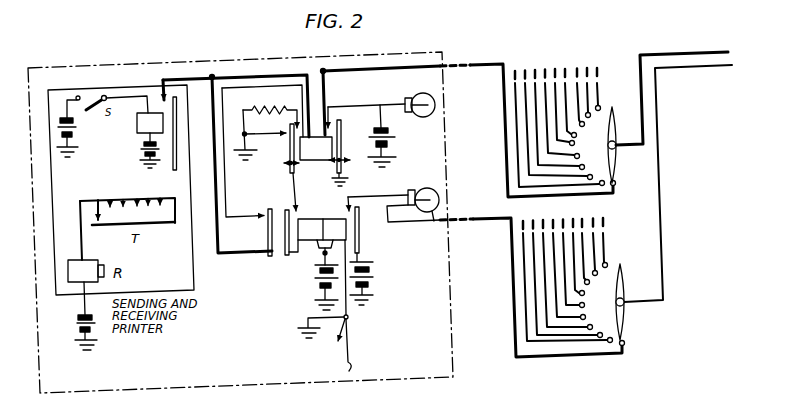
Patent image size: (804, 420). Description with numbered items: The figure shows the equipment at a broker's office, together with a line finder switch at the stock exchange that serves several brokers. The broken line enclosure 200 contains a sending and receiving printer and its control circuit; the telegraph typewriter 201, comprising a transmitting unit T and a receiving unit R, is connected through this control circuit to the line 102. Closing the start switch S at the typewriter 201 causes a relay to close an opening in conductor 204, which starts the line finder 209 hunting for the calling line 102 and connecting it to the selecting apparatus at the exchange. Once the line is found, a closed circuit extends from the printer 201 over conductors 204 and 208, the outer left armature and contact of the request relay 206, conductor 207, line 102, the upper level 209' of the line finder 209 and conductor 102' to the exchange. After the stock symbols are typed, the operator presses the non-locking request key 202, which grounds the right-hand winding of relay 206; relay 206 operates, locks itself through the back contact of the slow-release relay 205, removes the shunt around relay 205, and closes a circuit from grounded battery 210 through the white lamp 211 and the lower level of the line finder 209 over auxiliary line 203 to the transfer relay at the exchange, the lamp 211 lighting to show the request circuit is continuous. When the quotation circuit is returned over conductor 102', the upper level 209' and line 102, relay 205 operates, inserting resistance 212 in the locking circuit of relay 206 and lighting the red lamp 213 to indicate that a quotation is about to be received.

The broken line enclosure 200 is at (105, 63).
The telegraph typewriter 201 is at (78, 295).
The request key 202 is at (349, 340).
The auxiliary line 203 is at (717, 70).
The conductor 204 is at (164, 81).
The slow-release relay 205 is at (299, 148).
The request relay 206 is at (336, 228).
The conductor 207 is at (247, 88).
The conductor 208 is at (218, 255).
The line finder 209 is at (532, 278).
The upper level of line finder 209' is at (565, 111).
The grounded battery 210 is at (370, 267).
The white lamp 211 is at (438, 220).
The resistance 212 is at (285, 120).
The red lamp 213 is at (430, 88).
The line 102 is at (469, 118).
The conductor 102' is at (672, 88).